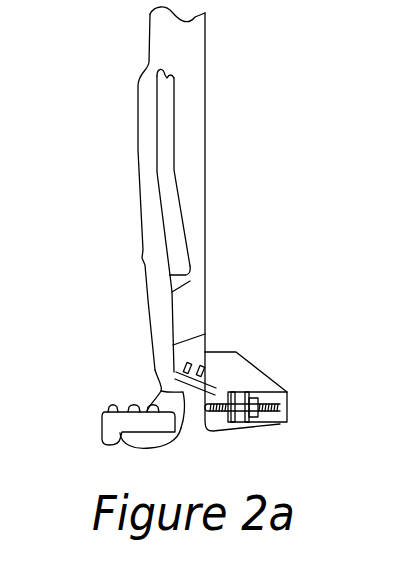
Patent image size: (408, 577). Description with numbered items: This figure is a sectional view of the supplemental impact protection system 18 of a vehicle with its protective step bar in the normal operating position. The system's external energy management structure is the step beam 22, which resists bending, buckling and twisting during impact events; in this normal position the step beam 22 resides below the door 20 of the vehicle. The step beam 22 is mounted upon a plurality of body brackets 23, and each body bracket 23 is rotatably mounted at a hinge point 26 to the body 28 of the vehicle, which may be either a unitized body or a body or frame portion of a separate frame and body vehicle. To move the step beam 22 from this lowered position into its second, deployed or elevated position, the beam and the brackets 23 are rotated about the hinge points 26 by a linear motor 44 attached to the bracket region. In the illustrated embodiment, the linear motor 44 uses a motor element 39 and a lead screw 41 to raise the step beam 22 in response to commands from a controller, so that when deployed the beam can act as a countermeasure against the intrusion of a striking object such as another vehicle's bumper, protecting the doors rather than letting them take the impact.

The supplemental impact protection system 18 is at (70, 405).
The door 20 is at (195, 85).
The step beam 22 is at (133, 422).
The body bracket 23 is at (196, 428).
The hinge point 26 is at (160, 386).
The body 28 is at (224, 362).
The motor element 39 is at (250, 397).
The lead screw 41 is at (268, 423).
The linear motor 44 is at (304, 413).